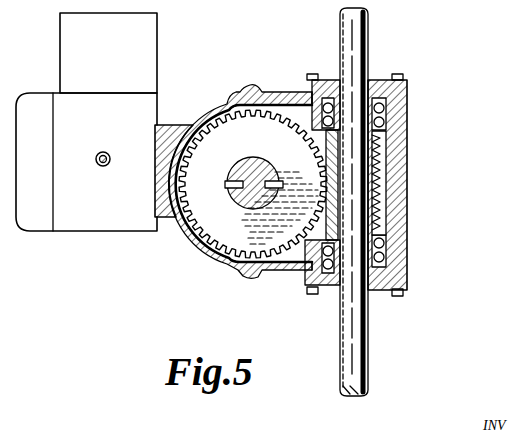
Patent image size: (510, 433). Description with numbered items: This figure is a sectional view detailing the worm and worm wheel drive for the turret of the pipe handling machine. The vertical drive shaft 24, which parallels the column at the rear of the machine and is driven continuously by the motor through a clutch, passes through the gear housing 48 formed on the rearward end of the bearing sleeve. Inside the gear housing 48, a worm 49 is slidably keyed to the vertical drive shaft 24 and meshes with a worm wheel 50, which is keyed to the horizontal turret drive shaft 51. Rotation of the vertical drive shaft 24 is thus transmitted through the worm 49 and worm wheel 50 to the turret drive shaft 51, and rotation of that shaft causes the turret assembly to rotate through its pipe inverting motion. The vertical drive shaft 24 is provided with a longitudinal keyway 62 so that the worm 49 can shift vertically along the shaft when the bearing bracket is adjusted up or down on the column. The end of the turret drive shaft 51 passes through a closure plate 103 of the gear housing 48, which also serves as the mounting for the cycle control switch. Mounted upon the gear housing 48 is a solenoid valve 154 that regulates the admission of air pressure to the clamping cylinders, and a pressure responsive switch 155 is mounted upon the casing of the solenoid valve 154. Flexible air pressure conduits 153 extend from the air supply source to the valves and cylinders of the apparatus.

The vertical drive shaft 24 is at (355, 325).
The gear housing 48 is at (408, 168).
The worm 49 is at (380, 188).
The worm wheel 50 is at (213, 222).
The turret drive shaft 51 is at (257, 172).
The longitudinal keyway 62 is at (342, 40).
The closure plate 103 is at (297, 115).
The flexible air pressure conduits 153 is at (109, 165).
The solenoid valve 154 is at (86, 231).
The pressure responsive switch 155 is at (152, 53).